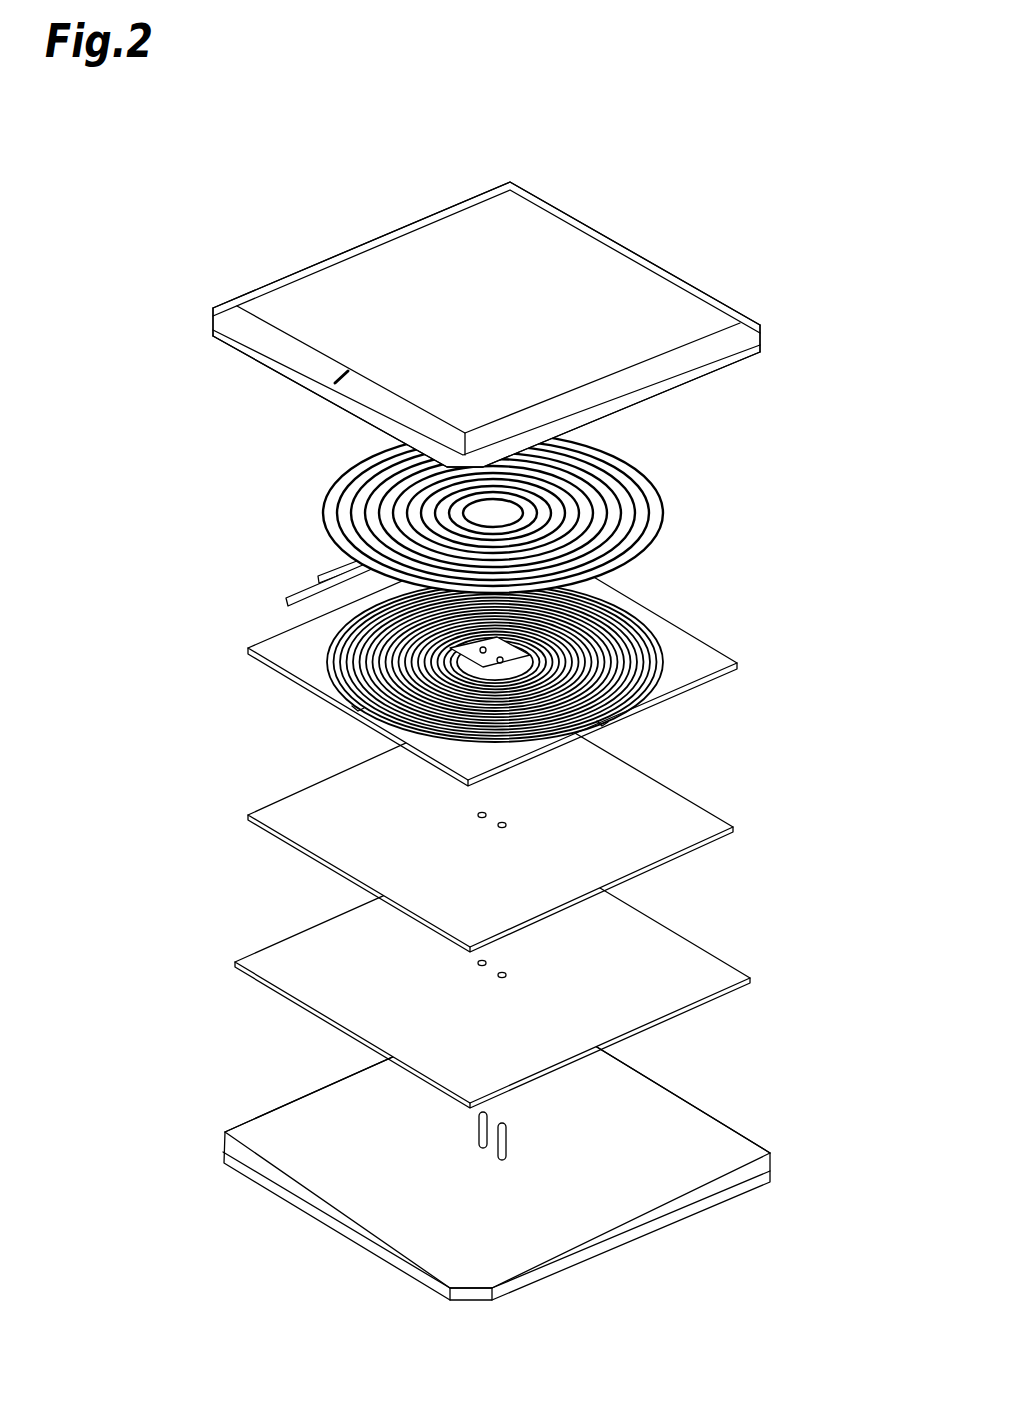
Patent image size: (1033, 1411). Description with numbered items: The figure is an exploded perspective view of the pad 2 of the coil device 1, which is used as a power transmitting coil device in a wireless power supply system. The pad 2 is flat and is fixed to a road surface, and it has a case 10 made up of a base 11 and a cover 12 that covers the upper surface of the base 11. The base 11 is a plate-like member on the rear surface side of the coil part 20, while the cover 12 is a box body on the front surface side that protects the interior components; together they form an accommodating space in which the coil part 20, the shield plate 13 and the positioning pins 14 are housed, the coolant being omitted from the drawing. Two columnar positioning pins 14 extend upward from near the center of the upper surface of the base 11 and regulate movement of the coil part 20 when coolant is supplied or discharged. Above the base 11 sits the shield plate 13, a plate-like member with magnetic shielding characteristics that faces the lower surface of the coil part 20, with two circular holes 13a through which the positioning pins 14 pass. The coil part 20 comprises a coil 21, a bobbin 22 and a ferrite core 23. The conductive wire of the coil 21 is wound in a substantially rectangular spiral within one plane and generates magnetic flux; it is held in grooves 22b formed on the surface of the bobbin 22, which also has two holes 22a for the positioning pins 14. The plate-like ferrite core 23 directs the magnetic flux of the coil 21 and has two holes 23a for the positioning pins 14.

The coil device 1 is at (498, 715).
The pad 2 is at (238, 226).
The case 10 is at (498, 741).
The base 11 is at (707, 1138).
The cover 12 is at (633, 280).
The shield plate 13 is at (481, 972).
The holes 13a is at (486, 961).
The positioning pin 14 is at (493, 1152).
The coil part 20 is at (456, 692).
The coil 21 is at (424, 513).
The bobbin 22 is at (481, 658).
The holes 22a is at (488, 648).
The grooves 22b is at (660, 640).
The ferrite core 23 is at (476, 808).
The holes 23a is at (486, 813).